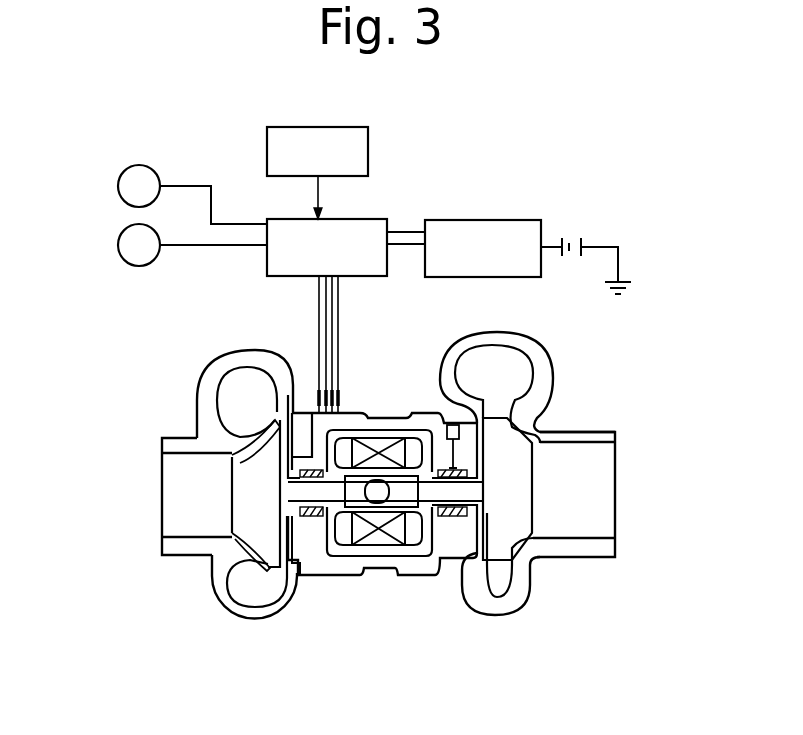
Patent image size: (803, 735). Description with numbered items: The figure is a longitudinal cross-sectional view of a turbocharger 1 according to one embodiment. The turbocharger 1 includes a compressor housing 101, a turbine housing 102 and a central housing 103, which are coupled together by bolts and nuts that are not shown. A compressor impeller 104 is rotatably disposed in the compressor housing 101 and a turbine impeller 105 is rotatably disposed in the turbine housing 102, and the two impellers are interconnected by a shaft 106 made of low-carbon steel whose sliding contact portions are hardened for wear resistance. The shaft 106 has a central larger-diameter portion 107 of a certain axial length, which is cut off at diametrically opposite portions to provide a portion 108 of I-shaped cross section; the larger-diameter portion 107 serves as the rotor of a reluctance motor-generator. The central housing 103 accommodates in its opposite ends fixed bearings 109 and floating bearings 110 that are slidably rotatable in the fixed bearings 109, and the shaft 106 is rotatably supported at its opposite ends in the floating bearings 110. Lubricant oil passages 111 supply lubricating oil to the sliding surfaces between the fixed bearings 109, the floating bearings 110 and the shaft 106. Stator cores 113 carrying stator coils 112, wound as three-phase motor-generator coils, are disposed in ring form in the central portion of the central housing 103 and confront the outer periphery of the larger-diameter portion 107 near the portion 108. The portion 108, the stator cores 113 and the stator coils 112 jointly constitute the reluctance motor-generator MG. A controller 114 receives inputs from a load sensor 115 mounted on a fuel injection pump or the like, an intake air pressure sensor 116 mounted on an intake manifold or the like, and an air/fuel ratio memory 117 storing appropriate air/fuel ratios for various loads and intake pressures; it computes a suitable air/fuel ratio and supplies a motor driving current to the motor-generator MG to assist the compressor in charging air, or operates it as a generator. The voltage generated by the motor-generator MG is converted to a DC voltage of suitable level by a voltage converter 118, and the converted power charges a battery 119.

The turbocharger 1 is at (588, 583).
The compressor housing 101 is at (166, 447).
The turbine housing 102 is at (617, 436).
The central housing 103 is at (362, 430).
The compressor impeller 104 is at (242, 534).
The turbine impeller 105 is at (522, 460).
The shaft 106 is at (437, 500).
The central larger-diameter portion 107 is at (407, 500).
The portion of I-shaped cross section 108 is at (380, 500).
The fixed bearings 109 is at (306, 462).
The floating bearings 110 is at (302, 476).
The lubricant oil passages 111 is at (447, 424).
The stator coils 112 is at (343, 413).
The stator cores 113 is at (388, 447).
The controller 114 is at (342, 222).
The load sensor 115 is at (140, 167).
The intake air pressure sensor 116 is at (125, 255).
The air/fuel ratio memory 117 is at (355, 127).
The voltage converter 118 is at (492, 220).
The battery 119 is at (582, 232).
The reluctance motor-generator MG is at (340, 536).